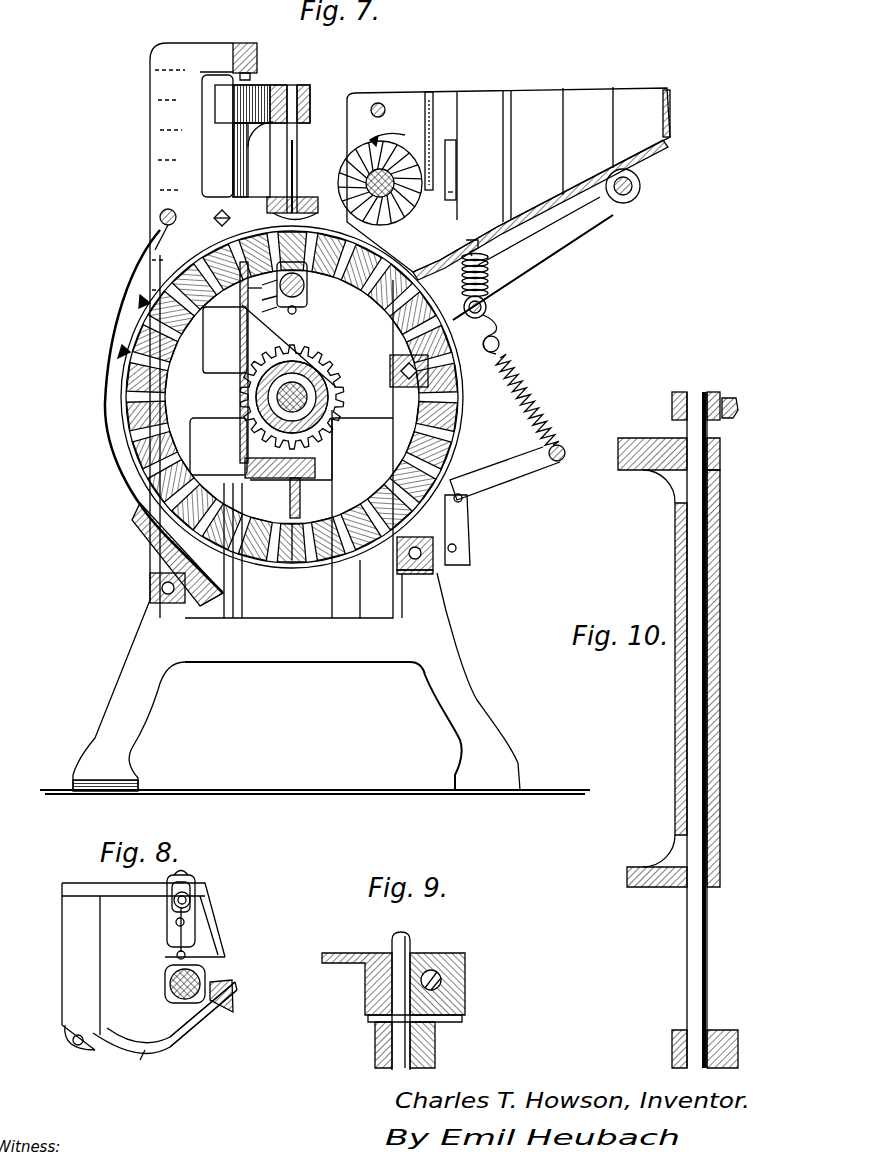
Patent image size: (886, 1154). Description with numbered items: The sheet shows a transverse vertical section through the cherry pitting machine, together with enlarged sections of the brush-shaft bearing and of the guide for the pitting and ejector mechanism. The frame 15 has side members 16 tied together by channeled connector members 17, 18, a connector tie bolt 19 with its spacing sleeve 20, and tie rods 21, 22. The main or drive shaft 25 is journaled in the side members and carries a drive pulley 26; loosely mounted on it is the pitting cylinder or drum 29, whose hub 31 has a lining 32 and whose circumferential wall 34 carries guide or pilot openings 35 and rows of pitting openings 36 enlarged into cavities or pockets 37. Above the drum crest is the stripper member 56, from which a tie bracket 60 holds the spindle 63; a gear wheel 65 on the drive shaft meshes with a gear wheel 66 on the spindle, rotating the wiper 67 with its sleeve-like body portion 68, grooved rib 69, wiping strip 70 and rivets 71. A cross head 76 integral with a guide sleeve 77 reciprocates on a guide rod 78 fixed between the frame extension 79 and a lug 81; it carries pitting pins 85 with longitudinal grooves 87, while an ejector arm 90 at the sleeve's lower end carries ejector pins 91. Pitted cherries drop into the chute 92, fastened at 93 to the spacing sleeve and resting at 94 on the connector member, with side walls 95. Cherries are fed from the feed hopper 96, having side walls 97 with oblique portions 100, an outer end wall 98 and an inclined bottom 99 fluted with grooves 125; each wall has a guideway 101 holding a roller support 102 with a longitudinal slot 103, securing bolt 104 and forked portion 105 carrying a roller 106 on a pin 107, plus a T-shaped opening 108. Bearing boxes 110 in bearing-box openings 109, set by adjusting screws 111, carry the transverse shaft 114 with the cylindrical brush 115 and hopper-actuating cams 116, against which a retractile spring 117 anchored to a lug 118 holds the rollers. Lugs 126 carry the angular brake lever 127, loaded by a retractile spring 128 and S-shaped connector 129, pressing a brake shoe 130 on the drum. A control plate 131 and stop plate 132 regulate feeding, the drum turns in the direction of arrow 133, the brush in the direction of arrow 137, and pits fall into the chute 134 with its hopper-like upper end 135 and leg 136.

In FIG. 7, the frame 15 is at (150, 172).
In FIG. 10, the frame 15 is at (728, 398).
In FIG. 7, the side members 16 is at (150, 632).
In FIG. 10, the side members 16 is at (675, 1035).
In FIG. 9, the side members 16 is at (345, 960).
In FIG. 7, the channeled connector member 17 is at (150, 588).
In FIG. 7, the channeled connector member 18 is at (436, 572).
In FIG. 7, the connector tie bolt 19 is at (176, 222).
In FIG. 7, the spacing sleeve 20 is at (176, 222).
In FIG. 7, the tie rod 21 is at (628, 196).
In FIG. 7, the tie rod 22 is at (498, 314).
In FIG. 7, the main or drive shaft 25 is at (250, 392).
In FIG. 7, the drive pulley 26 is at (272, 212).
In FIG. 7, the pitting cylinder or drum 29 is at (306, 566).
In FIG. 7, the hub 31 is at (322, 418).
In FIG. 7, the lining 32 is at (308, 389).
In FIG. 7, the circumferential wall 34 is at (462, 428).
In FIG. 7, the guide or pilot openings 35 is at (380, 322).
In FIG. 7, the pitting openings 36 is at (360, 280).
In FIG. 7, the cavities or pockets 37 is at (380, 292).
In FIG. 7, the stripper member 56 is at (305, 196).
In FIG. 7, the tie bracket 60 is at (255, 200).
In FIG. 7, the spindle 63 is at (296, 308).
In FIG. 7, the gear wheel 65 is at (335, 430).
In FIG. 7, the gear wheel 66 is at (240, 337).
In FIG. 7, the rotatable wiper 67 is at (306, 276).
In FIG. 7, the sleeve-like body portion 68 is at (288, 305).
In FIG. 7, the grooved rib or extension 69 is at (270, 300).
In FIG. 7, the wiping strip 70 is at (248, 290).
In FIG. 7, the rivets 71 is at (268, 282).
In FIG. 7, the cross head 76 is at (310, 106).
In FIG. 10, the cross head 76 is at (620, 462).
In FIG. 7, the guide sleeve 77 is at (210, 175).
In FIG. 10, the guide sleeve 77 is at (675, 712).
In FIG. 7, the guide rod 78 is at (252, 77).
In FIG. 10, the guide rod 78 is at (720, 740).
In FIG. 7, the extension 79 is at (210, 55).
In FIG. 10, the extension 79 is at (734, 416).
In FIG. 10, the lug 81 is at (718, 1032).
In FIG. 7, the pitting pins 85 is at (298, 140).
In FIG. 7, the longitudinal grooves 87 is at (298, 165).
In FIG. 7, the ejector arm or cross head 90 is at (268, 478).
In FIG. 7, the ejector pins 91 is at (300, 495).
In FIG. 7, the chute 92 is at (106, 408).
In FIG. 7, the chute upper end fastening 93 is at (160, 217).
In FIG. 7, the chute lower end rest 94 is at (160, 560).
In FIG. 7, the side walls 95 is at (200, 606).
In FIG. 7, the feed hopper 96 is at (504, 95).
In FIG. 8, the feed hopper 96 is at (238, 1004).
In FIG. 7, the side walls 97 is at (556, 96).
In FIG. 8, the side walls 97 is at (148, 1018).
In FIG. 7, the outer end wall 98 is at (668, 112).
In FIG. 7, the inclined bottom 99 is at (535, 212).
In FIG. 7, the oblique portions 100 is at (485, 160).
In FIG. 8, the oblique portions 100 is at (62, 945).
In FIG. 8, the guideway 101 is at (200, 918).
In FIG. 8, the roller support 102 is at (192, 880).
In FIG. 8, the longitudinal slot 103 is at (180, 922).
In FIG. 8, the securing bolt 104 is at (172, 900).
In FIG. 8, the forked portion 105 is at (190, 940).
In FIG. 8, the roller 106 is at (225, 957).
In FIG. 8, the pin 107 is at (176, 955).
In FIG. 8, the T-shaped opening 108 is at (235, 977).
In FIG. 9, the bearing-box openings 109 is at (466, 968).
In FIG. 9, the bearing boxes or blocks 110 is at (438, 952).
In FIG. 9, the adjusting screw 111 is at (440, 985).
In FIG. 7, the transverse shaft 114 is at (405, 205).
In FIG. 8, the transverse shaft 114 is at (170, 990).
In FIG. 9, the transverse shaft 114 is at (436, 1040).
In FIG. 7, the cylindrical brush 115 is at (457, 188).
In FIG. 8, the hopper-actuating cams 116 is at (212, 1003).
In FIG. 7, the retractile spring 117 is at (490, 276).
In FIG. 7, the lug 118 is at (481, 242).
In FIG. 7, the grooves 125 is at (435, 258).
In FIG. 8, the grooves 125 is at (120, 1045).
In FIG. 7, the spaced lugs 126 is at (470, 556).
In FIG. 7, the angular brake lever 127 is at (470, 515).
In FIG. 7, the retractile spring 128 is at (530, 392).
In FIG. 7, the S-shaped connector 129 is at (505, 335).
In FIG. 7, the brake shoe 130 is at (462, 460).
In FIG. 7, the control plate 131 is at (457, 152).
In FIG. 7, the stop plate 132 is at (434, 128).
In FIG. 7, the arrow 133 is at (132, 322).
In FIG. 7, the chute 134 is at (300, 368).
In FIG. 7, the hopper-like upper end 135 is at (300, 345).
In FIG. 7, the leg 136 is at (332, 515).
In FIG. 7, the arrow 137 is at (395, 131).